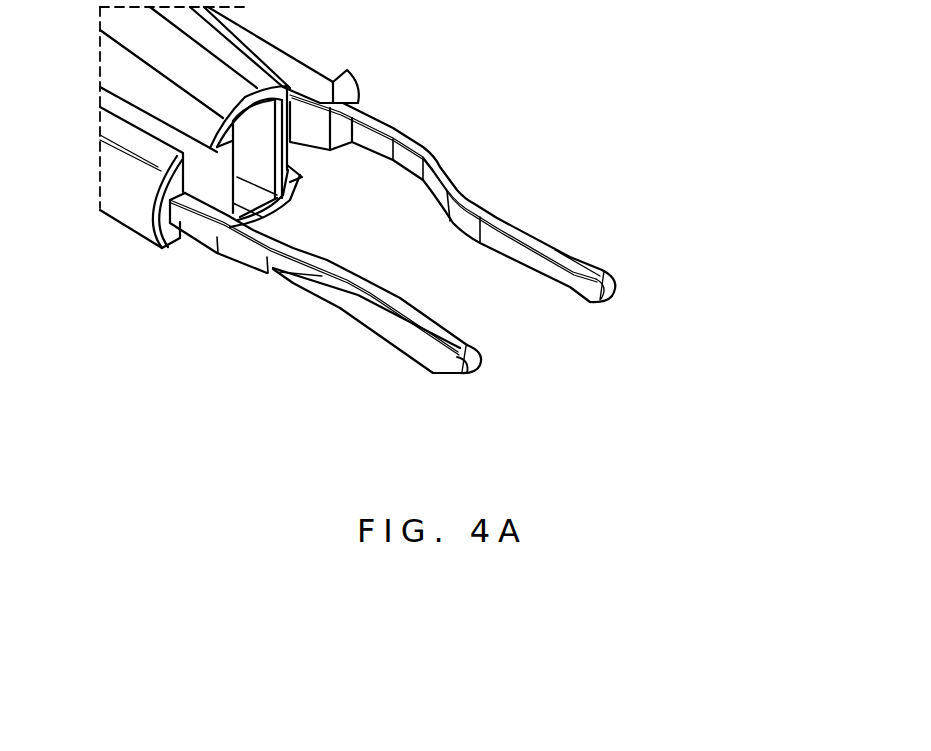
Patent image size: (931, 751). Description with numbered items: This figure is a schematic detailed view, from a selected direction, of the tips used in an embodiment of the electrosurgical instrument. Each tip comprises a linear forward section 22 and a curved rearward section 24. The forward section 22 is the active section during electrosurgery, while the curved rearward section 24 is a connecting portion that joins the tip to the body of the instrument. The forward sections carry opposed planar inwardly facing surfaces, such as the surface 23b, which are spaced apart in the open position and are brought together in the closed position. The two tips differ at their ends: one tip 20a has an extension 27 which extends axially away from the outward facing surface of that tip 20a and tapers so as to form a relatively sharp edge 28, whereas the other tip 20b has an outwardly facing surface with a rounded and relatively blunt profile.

The linear forward section 22 is at (551, 243).
The curved rearward section 24 is at (433, 156).
The planar inwardly facing surface 23b is at (570, 283).
The tip 20b is at (620, 285).
The extension 27 is at (377, 323).
The sharp edge 28 is at (417, 363).
The tip 20a is at (470, 375).